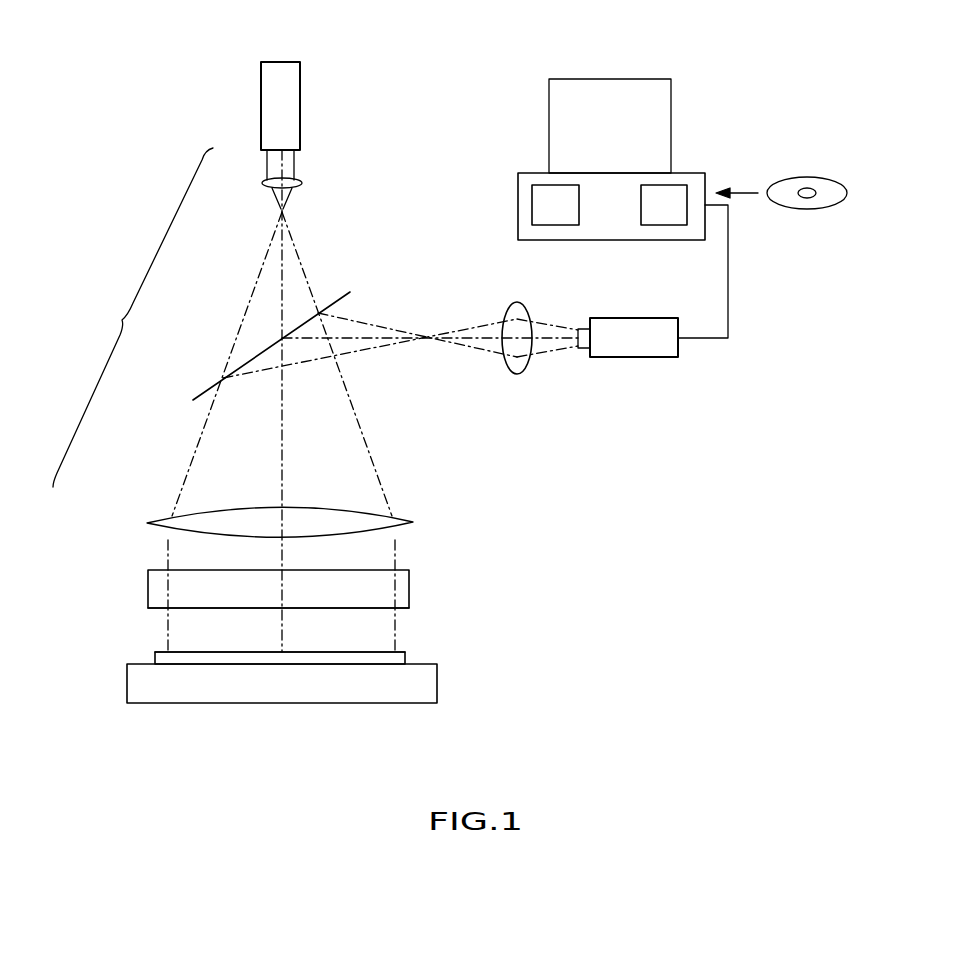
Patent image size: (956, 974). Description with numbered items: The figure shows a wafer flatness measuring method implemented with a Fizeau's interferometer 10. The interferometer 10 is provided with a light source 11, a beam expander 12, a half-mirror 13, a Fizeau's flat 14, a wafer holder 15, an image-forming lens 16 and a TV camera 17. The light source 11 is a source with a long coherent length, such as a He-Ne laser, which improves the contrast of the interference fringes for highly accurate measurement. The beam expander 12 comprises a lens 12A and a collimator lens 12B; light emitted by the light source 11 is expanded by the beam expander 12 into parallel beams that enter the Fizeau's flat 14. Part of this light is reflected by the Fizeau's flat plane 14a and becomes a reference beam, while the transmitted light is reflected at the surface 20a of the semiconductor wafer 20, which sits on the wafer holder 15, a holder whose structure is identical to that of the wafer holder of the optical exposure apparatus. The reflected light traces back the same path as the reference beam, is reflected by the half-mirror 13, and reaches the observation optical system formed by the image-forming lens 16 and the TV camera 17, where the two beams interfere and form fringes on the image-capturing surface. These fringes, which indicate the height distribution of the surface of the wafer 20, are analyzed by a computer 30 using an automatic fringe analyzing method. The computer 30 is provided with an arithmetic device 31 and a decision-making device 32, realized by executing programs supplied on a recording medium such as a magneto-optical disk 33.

The Fizeau's interferometer 10 is at (247, 97).
The light source 11 is at (300, 105).
The beam expander 12 is at (224, 400).
The lens 12A is at (263, 184).
The collimator lens 12B is at (157, 522).
The half-mirror 13 is at (342, 297).
The Fizeau's flat 14 is at (409, 583).
The Fizeau's flat plane 14a is at (148, 607).
The wafer holder 15 is at (437, 683).
The image-forming lens 16 is at (517, 366).
The TV camera 17 is at (635, 357).
The semiconductor wafer 20 is at (155, 658).
The surface of the semiconductor wafer 20a is at (398, 652).
The computer 30 is at (706, 183).
The arithmetic device 31 is at (556, 225).
The decision-making device 32 is at (665, 225).
The magneto-optical disk 33 is at (808, 176).